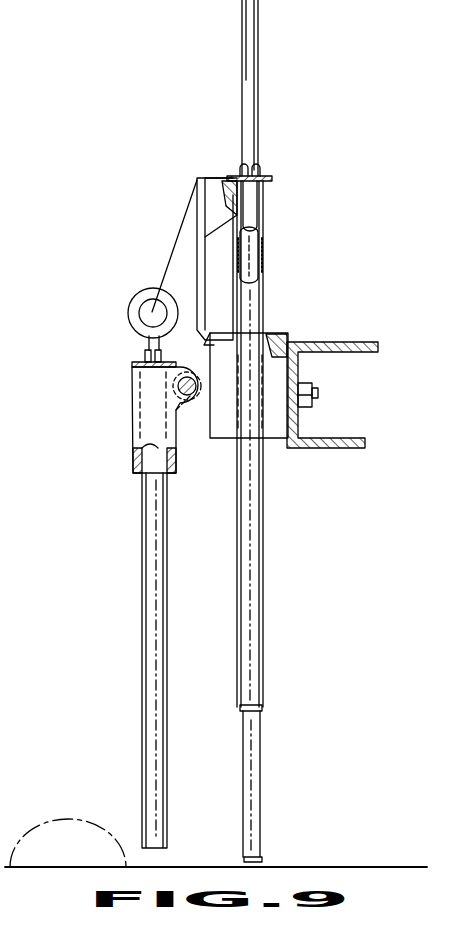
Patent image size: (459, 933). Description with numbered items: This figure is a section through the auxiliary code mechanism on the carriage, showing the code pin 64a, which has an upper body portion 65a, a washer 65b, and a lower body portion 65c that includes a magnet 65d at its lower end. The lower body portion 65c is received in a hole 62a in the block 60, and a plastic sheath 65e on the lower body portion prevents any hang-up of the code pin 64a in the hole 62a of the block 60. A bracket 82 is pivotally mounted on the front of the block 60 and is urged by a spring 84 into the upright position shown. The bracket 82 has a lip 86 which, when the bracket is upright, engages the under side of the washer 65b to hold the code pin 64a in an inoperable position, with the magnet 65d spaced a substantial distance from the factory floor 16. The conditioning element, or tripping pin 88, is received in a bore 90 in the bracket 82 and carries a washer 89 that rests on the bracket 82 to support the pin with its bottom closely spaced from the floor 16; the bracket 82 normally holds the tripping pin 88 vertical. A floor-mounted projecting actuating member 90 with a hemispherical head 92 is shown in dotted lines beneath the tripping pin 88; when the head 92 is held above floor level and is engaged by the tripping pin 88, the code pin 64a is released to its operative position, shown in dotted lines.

The upper body portion 65a is at (259, 60).
The washer 65b is at (273, 177).
The lower body portion 65c is at (253, 240).
The plastic sheath 65e is at (264, 260).
The auxiliary code mechanism code pin 64a is at (274, 562).
The bracket 82 is at (184, 233).
The lip 86 is at (215, 177).
The hole 62a is at (256, 334).
The block 60 is at (286, 343).
The washer 89 is at (138, 364).
The spring 84 is at (172, 381).
The bore 90 is at (148, 470).
The tripping pin 88 is at (148, 578).
The magnet 65d is at (246, 690).
The factory floor 16 is at (292, 866).
The hemispherical head 92 is at (115, 846).